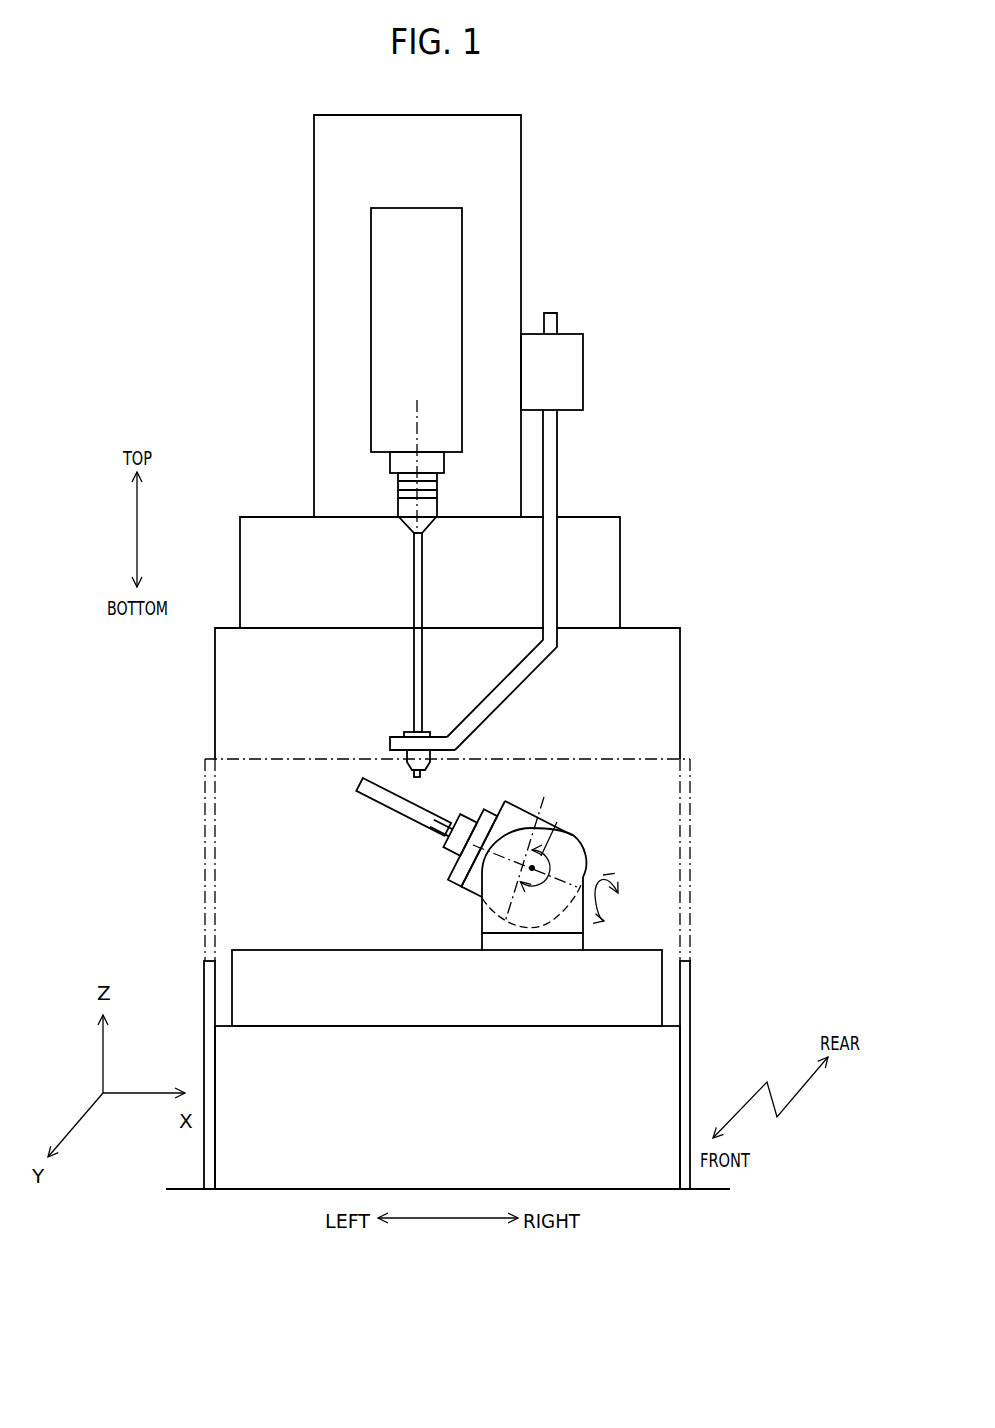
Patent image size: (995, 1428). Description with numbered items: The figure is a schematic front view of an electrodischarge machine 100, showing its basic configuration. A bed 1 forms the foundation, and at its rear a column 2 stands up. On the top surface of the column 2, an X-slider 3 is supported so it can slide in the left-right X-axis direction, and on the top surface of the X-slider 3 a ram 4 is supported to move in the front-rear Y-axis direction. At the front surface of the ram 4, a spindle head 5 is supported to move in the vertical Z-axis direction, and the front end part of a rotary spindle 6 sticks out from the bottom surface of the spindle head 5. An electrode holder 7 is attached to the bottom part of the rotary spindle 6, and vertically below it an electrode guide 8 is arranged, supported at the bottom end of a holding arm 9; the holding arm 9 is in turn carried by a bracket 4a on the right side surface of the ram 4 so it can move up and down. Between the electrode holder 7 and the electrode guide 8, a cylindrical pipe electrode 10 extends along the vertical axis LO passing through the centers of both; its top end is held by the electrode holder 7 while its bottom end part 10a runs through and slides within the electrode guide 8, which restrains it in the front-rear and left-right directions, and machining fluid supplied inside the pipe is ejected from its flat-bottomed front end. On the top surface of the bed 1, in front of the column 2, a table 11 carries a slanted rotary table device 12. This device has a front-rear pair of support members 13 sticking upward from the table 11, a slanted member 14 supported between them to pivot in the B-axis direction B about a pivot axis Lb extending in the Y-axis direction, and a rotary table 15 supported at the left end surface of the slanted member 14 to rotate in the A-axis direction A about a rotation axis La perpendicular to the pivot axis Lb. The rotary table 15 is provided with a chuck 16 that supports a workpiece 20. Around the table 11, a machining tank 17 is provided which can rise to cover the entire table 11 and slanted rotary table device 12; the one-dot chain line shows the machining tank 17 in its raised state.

The machine tool 100 is at (720, 195).
The bed 1 is at (635, 1080).
The column 2 is at (680, 653).
The X-slider 3 is at (620, 541).
The ram 4 is at (521, 138).
The bracket 4a is at (583, 360).
The spindle head 5 is at (371, 263).
The rotary spindle 6 is at (390, 462).
The electrode holder 7 is at (398, 506).
The electrode guide 8 is at (404, 768).
The holding arm 9 is at (557, 452).
The electrode 10 is at (422, 594).
The probe tip 10a is at (421, 777).
The table 11 is at (638, 994).
The slanted rotary table device 12 is at (654, 811).
The support members 13 is at (482, 916).
The slanted member 14 is at (573, 833).
The rotary table 15 is at (458, 877).
The chuck 16 is at (447, 853).
The machining tank 17 is at (204, 989).
The workpiece 20 is at (360, 794).
The axis L0 LO is at (418, 452).
The rotation axis La is at (618, 873).
The pivot axis Lb is at (532, 845).
The A-axis direction A is at (612, 903).
The B-axis direction B is at (525, 868).